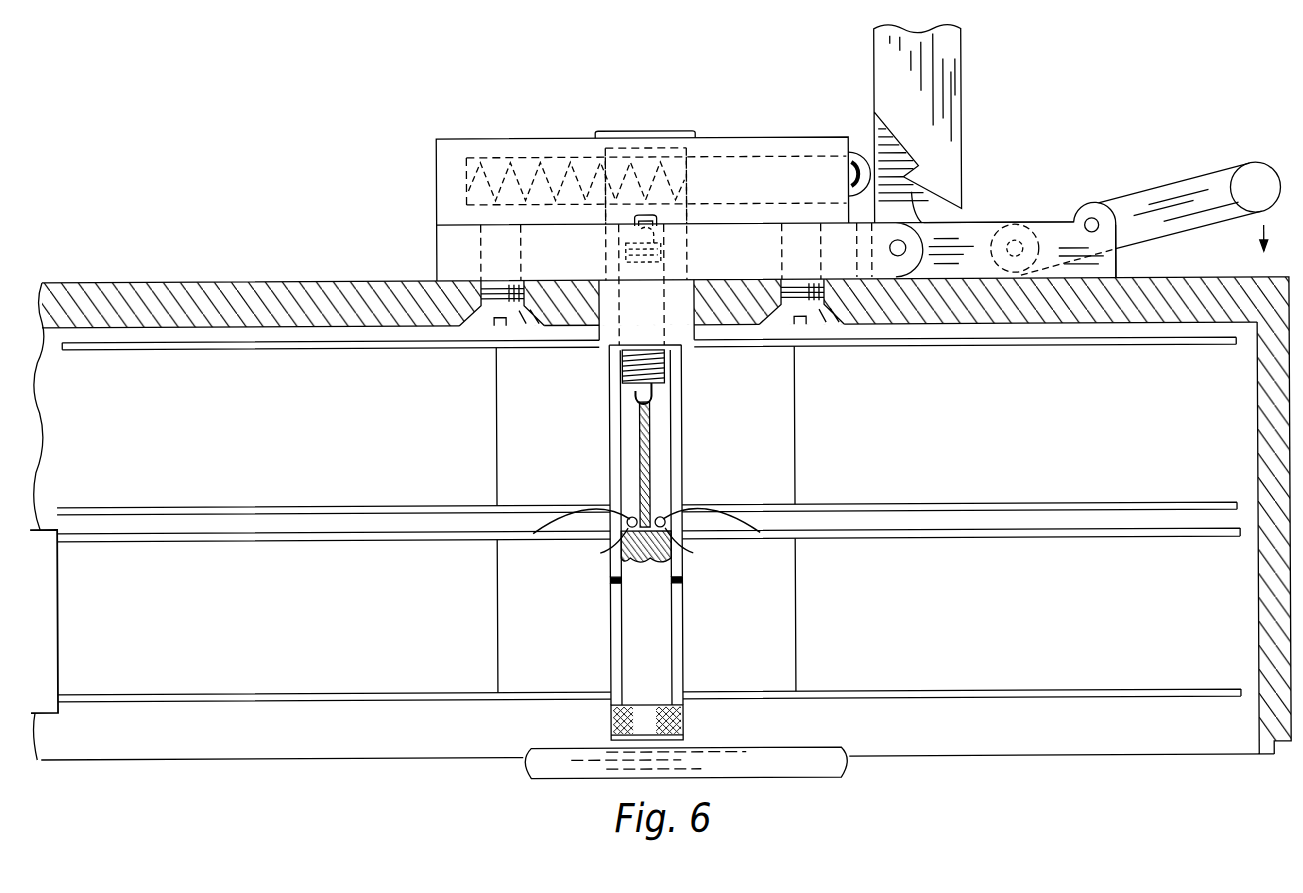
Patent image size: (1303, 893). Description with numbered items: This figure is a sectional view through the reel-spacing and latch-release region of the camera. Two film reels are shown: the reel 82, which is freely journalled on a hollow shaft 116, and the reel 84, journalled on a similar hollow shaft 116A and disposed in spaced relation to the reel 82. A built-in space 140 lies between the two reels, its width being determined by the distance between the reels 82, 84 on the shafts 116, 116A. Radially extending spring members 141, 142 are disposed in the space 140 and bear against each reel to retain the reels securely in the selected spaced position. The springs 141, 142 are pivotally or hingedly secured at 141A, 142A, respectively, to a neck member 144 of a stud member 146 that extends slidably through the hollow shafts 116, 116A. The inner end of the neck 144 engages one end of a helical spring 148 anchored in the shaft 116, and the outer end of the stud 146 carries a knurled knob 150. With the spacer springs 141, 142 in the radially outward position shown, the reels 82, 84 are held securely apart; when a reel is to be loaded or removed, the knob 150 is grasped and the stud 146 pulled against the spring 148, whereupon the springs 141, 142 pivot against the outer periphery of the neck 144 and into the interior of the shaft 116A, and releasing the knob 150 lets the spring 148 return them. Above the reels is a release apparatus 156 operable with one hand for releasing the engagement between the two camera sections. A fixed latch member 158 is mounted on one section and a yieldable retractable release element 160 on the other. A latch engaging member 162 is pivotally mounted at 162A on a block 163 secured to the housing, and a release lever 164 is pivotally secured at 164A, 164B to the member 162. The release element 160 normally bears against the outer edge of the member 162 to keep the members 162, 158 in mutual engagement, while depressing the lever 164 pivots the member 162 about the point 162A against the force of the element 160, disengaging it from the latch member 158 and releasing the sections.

The reel 82 is at (1213, 348).
The reel 84 is at (1178, 700).
The shaft 116 is at (678, 442).
The shaft 116A is at (676, 603).
The space 140 is at (976, 516).
The spring member 141 is at (585, 522).
The pivot 141A is at (607, 546).
The spring member 142 is at (758, 528).
The pivot 142A is at (686, 538).
The neck member 144 is at (640, 442).
The stud member 146 is at (636, 603).
The helical spring 148 is at (620, 366).
The knurled knob 150 is at (684, 724).
The release apparatus 156 is at (981, 186).
The fixed latch member 158 is at (950, 113).
The retractable release element 160 is at (861, 154).
The latch engaging member 162 is at (880, 135).
The pivot 162A is at (897, 257).
The block 163 is at (465, 256).
The release lever 164 is at (1204, 192).
The pivot 164A is at (1020, 250).
The pivot 164B is at (1100, 231).